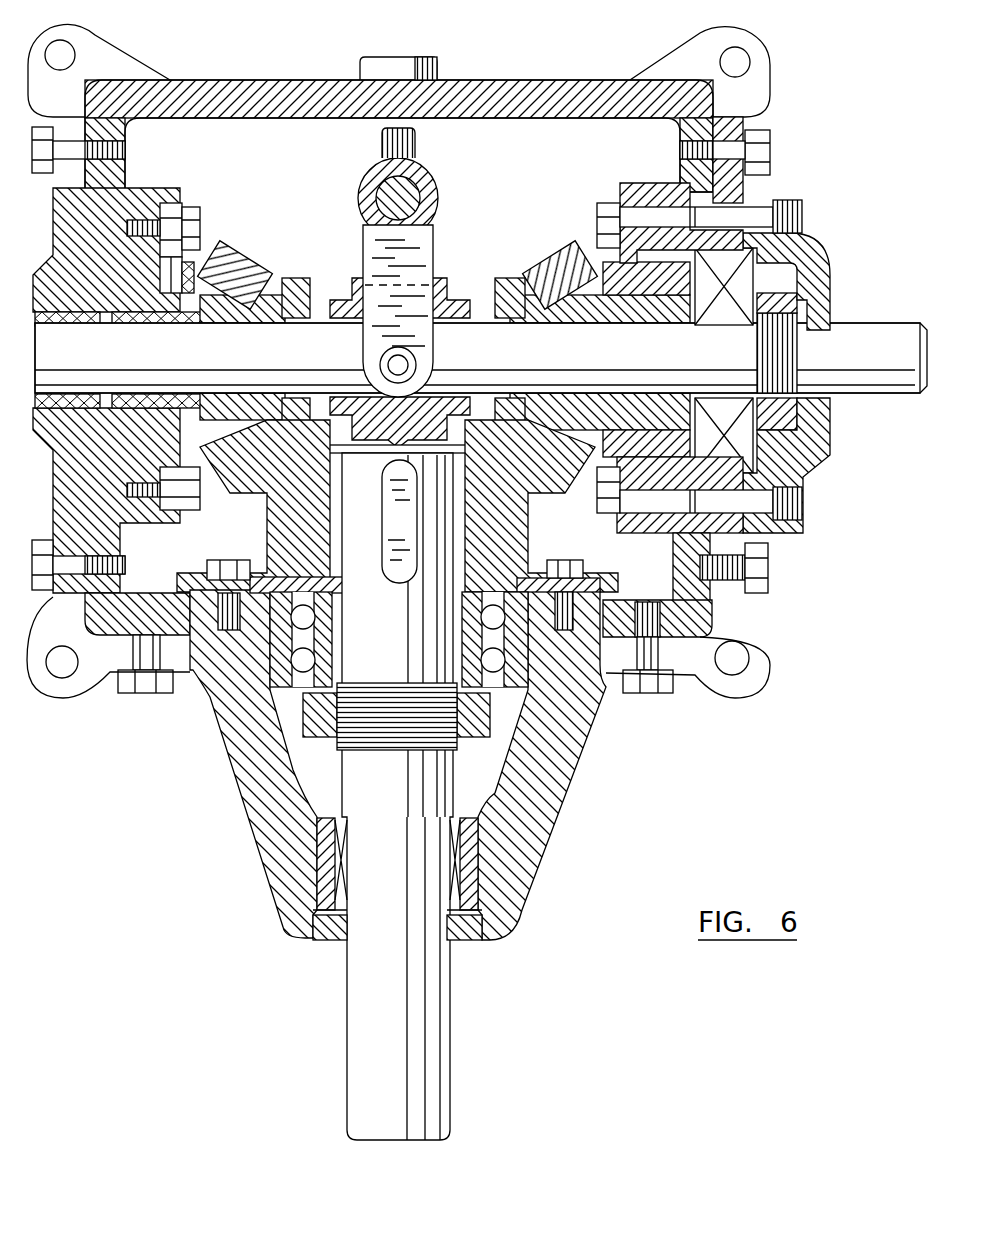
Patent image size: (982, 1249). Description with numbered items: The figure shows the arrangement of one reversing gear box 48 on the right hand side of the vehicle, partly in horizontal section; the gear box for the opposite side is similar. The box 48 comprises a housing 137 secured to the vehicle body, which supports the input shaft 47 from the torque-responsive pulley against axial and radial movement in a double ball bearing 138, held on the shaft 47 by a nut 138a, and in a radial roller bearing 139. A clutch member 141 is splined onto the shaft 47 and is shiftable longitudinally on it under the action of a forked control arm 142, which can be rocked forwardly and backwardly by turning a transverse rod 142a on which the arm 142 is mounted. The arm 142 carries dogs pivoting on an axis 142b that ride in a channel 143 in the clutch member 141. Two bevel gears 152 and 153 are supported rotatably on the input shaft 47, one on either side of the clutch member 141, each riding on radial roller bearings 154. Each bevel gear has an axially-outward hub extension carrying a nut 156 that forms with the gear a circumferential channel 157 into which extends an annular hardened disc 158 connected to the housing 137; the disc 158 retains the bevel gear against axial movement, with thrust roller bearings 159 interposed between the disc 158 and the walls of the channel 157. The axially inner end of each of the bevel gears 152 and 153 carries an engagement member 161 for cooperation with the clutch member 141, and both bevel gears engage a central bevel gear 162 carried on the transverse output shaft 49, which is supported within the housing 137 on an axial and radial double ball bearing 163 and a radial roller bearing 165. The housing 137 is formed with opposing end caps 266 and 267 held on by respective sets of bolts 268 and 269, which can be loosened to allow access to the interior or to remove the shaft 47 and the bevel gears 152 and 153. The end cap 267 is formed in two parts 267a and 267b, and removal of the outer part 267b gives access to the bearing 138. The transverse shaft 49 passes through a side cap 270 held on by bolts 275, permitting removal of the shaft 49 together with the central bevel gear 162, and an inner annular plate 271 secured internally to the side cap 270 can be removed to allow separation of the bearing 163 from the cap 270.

The input shaft 47 is at (868, 332).
The reversing gear box 48 is at (480, 582).
The transverse output shaft 49 is at (457, 548).
The housing 137 is at (690, 602).
The double ball bearing 138 is at (723, 328).
The nut 138a is at (808, 300).
The radial roller bearing 139 is at (72, 318).
The clutch member 141 is at (436, 292).
The forked control arm 142 is at (434, 262).
The transverse rod 142a is at (420, 188).
The axis 142b is at (418, 365).
The channel 143 is at (395, 437).
The bevel gear 152 is at (248, 274).
The bevel gear 153 is at (560, 272).
The radial roller bearings 154 is at (205, 330).
The nut 156 is at (133, 277).
The circumferential channel 157 is at (139, 328).
The annular hardened disc 158 is at (178, 262).
The thrust roller bearings 159 is at (186, 290).
The engagement member 161 is at (300, 280).
The central bevel gear 162 is at (258, 495).
The double ball bearing 163 is at (513, 643).
The radial roller bearing 165 is at (455, 892).
The end cap 266 is at (120, 523).
The end cap 267 is at (728, 540).
The inner part of end cap 267a is at (740, 180).
The outer part of end cap 267b is at (778, 195).
The bolts 268 is at (118, 577).
The bolts 269 is at (765, 575).
The side cap 270 is at (556, 760).
The inner annular plate 271 is at (535, 568).
The bolts 275 is at (667, 690).